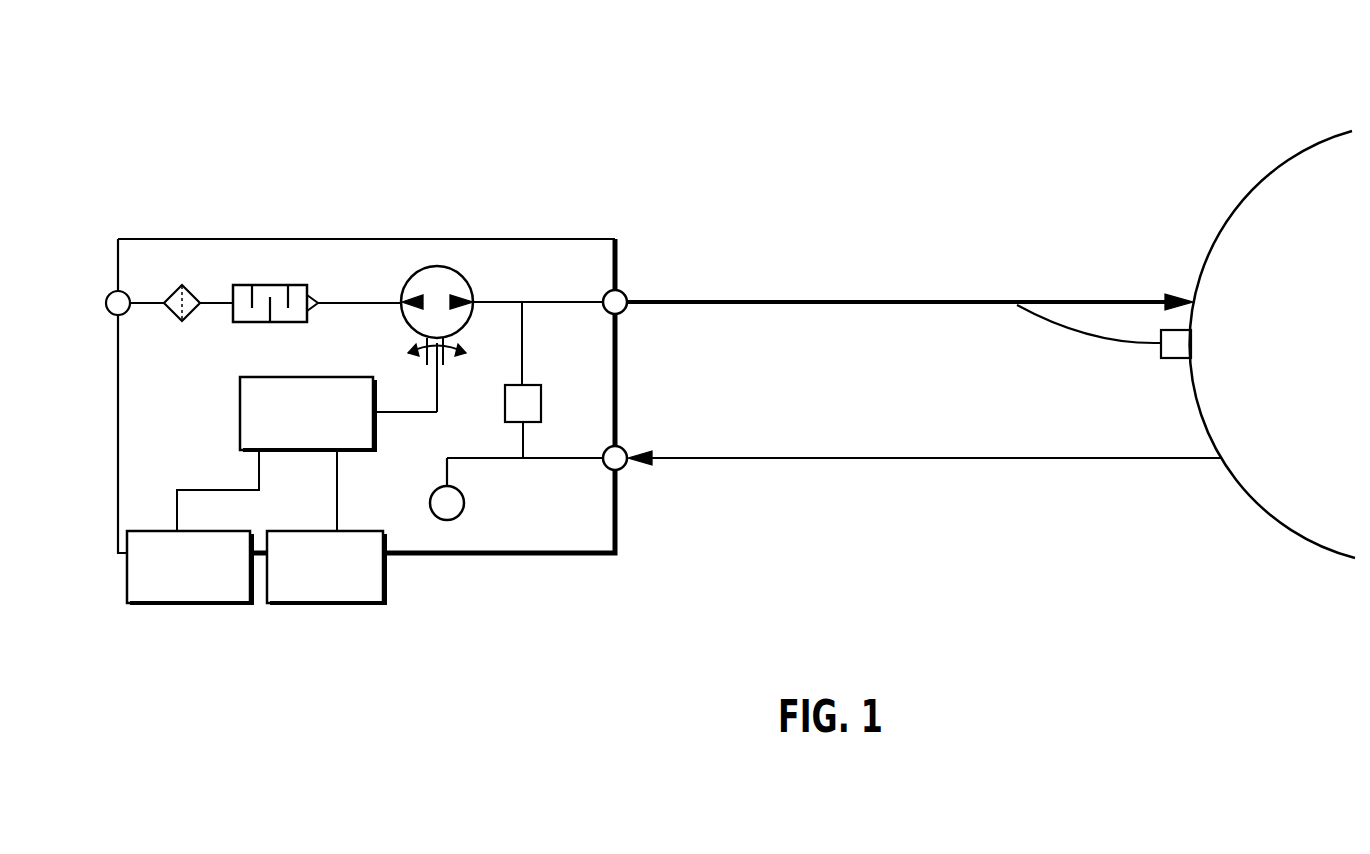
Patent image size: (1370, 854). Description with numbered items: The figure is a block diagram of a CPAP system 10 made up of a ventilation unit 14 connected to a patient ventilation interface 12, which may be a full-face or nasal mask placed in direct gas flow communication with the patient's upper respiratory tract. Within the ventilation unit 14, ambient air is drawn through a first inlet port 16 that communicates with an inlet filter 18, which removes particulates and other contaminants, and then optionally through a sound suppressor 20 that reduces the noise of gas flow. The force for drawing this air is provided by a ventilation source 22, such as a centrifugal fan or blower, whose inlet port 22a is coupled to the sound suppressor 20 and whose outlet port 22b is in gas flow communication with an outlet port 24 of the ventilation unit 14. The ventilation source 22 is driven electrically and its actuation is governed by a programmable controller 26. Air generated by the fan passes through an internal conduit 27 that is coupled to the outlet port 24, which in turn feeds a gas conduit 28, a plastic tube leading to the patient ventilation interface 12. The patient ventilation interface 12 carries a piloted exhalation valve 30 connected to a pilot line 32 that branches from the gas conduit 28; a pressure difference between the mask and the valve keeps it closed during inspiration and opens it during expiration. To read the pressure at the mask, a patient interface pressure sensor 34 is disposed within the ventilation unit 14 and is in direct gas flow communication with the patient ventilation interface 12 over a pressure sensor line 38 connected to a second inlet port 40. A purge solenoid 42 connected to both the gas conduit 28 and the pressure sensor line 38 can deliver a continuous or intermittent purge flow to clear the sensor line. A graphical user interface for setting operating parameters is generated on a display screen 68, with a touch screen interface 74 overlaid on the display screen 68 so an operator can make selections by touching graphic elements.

The CPAP system 10 is at (798, 588).
The patient ventilation interface 12 is at (1272, 344).
The ventilation unit 14 is at (610, 560).
The first inlet port 16 is at (112, 313).
The inlet filter 18 is at (182, 322).
The sound suppressor 20 is at (265, 322).
The ventilation source 22 is at (405, 284).
The inlet port 22a is at (405, 308).
The outlet port 22b is at (470, 300).
The outlet port 24 is at (628, 292).
The programmable controller 26 is at (240, 408).
The internal conduit 27 is at (550, 300).
The gas conduit 28 is at (848, 300).
The piloted exhalation valve 30 is at (1182, 346).
The pilot line 32 is at (1088, 332).
The patient interface pressure sensor 34 is at (433, 495).
The pressure sensor line 38 is at (820, 456).
The second inlet port 40 is at (628, 450).
The purge solenoid 42 is at (541, 403).
The display screen 68 is at (180, 603).
The touch screen interface 74 is at (337, 603).